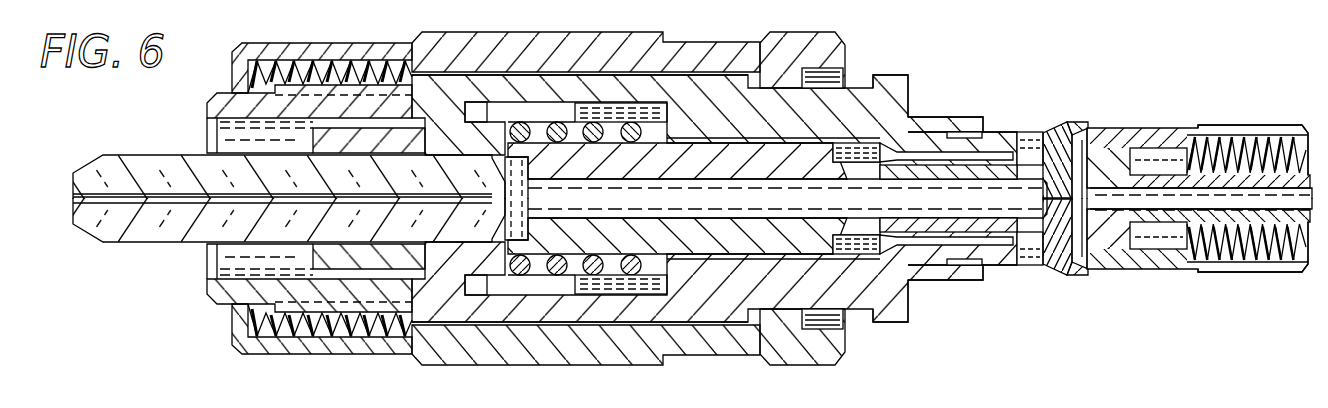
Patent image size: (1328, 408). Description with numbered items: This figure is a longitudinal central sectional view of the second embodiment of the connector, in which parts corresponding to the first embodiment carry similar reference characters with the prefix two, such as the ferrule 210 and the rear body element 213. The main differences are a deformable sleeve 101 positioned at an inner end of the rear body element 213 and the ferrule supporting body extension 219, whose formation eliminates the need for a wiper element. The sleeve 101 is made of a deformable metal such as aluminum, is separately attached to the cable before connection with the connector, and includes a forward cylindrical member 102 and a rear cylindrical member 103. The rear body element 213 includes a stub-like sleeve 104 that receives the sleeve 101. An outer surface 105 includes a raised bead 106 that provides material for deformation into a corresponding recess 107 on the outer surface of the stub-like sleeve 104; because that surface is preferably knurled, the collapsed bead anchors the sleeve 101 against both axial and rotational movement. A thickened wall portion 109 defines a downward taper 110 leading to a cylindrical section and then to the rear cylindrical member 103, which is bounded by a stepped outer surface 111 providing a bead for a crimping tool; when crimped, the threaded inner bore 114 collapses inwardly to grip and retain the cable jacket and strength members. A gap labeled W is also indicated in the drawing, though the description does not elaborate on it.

The ferrule 210 is at (913, 72).
The forward cylindrical member 102 is at (927, 117).
The outer surface 105 is at (995, 133).
The deformable sleeve 101 is at (1037, 125).
The downward taper 110 is at (1082, 125).
The gap width W is at (1175, 127).
The rear cylindrical member 103 is at (1213, 127).
The threaded inner bore 114 is at (1283, 147).
The thickened wall portion 109 is at (1060, 257).
The ferrule supporting body extension 219 is at (1053, 243).
The stub-like sleeve 104 is at (1002, 258).
The raised bead 106 is at (959, 270).
The recess 107 is at (957, 267).
The rear body element 213 is at (897, 312).
The stepped outer surface 111 is at (1300, 278).